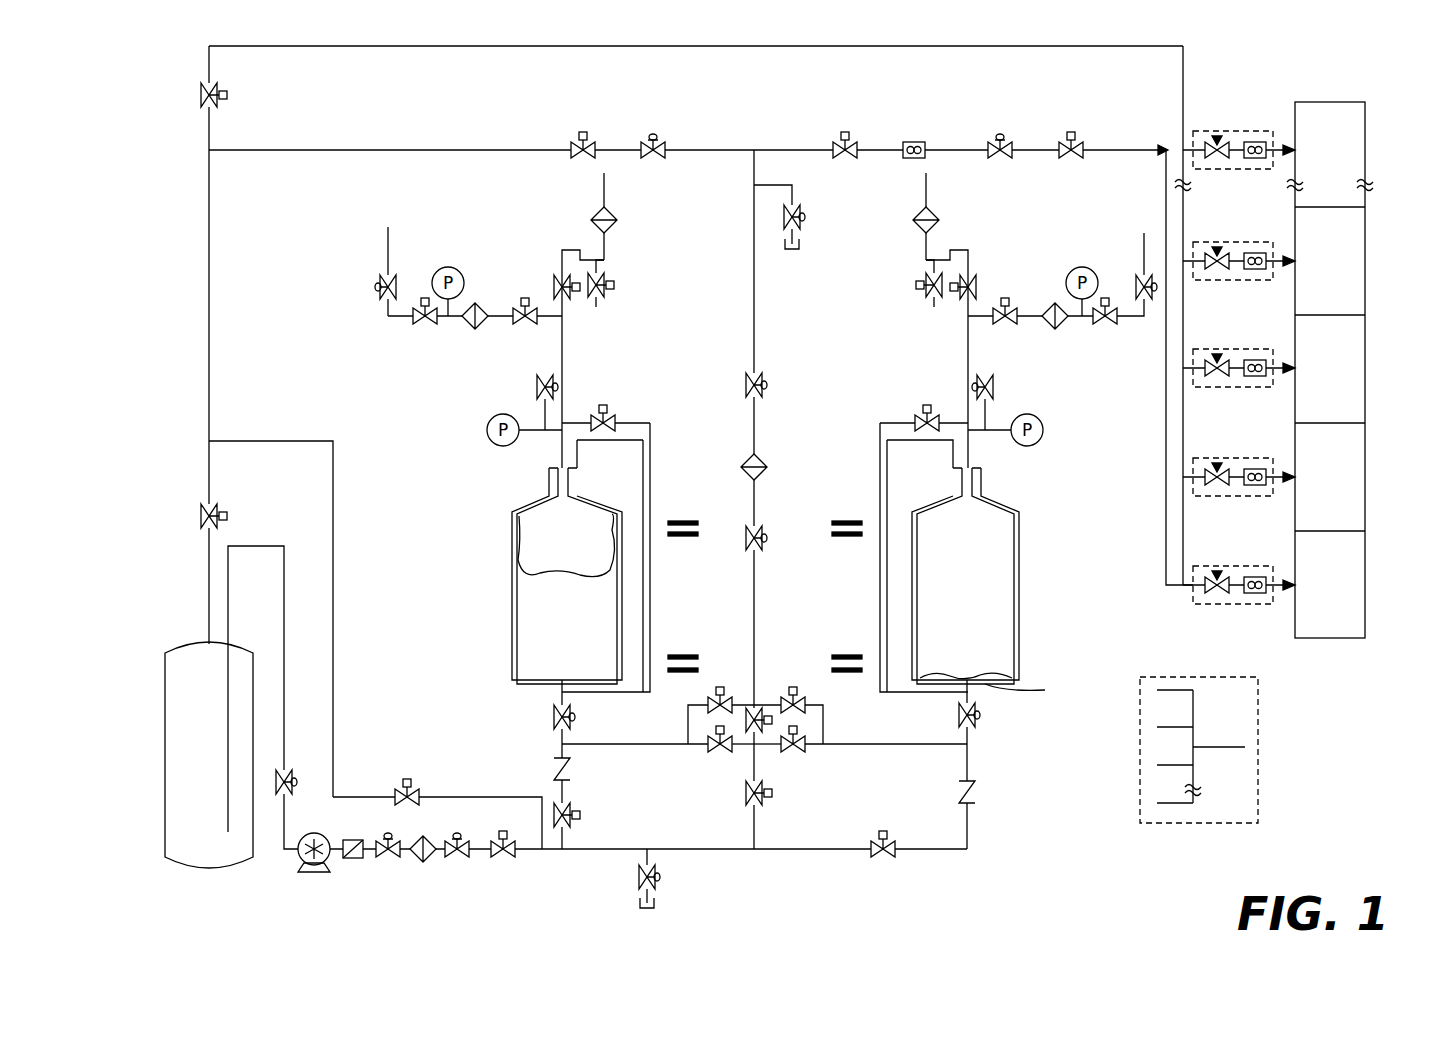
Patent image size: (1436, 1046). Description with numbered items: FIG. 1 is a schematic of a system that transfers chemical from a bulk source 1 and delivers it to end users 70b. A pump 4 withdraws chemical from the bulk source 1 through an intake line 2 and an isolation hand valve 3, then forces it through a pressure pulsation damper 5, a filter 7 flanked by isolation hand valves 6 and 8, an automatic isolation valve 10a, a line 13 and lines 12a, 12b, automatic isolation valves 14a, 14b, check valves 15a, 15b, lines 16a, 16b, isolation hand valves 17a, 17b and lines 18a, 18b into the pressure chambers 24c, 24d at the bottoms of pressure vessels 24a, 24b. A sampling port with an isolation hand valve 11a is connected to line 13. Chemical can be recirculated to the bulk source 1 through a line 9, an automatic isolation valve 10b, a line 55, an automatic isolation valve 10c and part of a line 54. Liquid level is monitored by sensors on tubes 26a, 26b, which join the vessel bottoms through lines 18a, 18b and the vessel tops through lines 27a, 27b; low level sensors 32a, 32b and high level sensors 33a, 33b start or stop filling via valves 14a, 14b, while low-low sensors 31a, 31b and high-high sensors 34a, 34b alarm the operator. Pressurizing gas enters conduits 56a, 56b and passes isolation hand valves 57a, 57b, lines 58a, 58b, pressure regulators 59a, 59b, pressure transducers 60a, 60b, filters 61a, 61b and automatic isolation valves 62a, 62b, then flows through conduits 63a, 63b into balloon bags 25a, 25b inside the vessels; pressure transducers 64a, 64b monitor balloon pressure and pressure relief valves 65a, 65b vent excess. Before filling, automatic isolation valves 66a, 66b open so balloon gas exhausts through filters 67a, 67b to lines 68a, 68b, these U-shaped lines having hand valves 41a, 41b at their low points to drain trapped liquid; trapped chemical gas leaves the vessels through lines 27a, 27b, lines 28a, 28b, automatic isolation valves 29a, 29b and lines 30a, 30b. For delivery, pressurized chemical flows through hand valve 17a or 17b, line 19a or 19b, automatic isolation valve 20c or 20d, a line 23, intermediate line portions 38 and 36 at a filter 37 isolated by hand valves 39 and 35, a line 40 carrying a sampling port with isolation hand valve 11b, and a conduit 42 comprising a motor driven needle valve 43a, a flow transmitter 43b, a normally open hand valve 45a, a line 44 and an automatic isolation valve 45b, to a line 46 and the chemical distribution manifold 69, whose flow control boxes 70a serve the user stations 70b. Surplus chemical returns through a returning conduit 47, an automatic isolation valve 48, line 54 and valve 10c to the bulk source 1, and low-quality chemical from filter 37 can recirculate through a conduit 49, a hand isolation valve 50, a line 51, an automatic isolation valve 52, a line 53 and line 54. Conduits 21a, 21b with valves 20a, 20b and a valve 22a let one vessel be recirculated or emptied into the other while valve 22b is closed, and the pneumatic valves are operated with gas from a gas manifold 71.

The bulk source 1 is at (164, 772).
The intake line 2 is at (287, 668).
The isolation hand valve 3 is at (300, 770).
The pump 4 is at (299, 866).
The pressure pulsation damper 5 is at (352, 858).
The isolation hand valve 6 is at (386, 861).
The filter 7 is at (428, 863).
The isolation hand valve 8 is at (459, 860).
The line 9 is at (484, 796).
The automatic isolation valve 10a is at (505, 860).
The automatic isolation valve 10b is at (418, 790).
The automatic isolation valve 10c is at (222, 514).
The isolation hand valve 11a is at (638, 879).
The isolation hand valve 11b is at (801, 208).
The line 12a is at (576, 846).
The line 12b is at (843, 853).
The line 13 is at (736, 853).
The automatic isolation valve 14a is at (576, 814).
The automatic isolation valve 14b is at (890, 859).
The check valve 15a is at (574, 770).
The check valve 15b is at (978, 793).
The line 16a is at (560, 746).
The line 16b is at (972, 752).
The isolation hand valve 17a is at (580, 716).
The isolation hand valve 17b is at (957, 717).
The line 18a is at (560, 691).
The line 18b is at (976, 695).
The line 19a is at (622, 744).
The line 19b is at (913, 753).
The valve 20a is at (713, 755).
The valve 20b is at (802, 754).
The automatic isolation valve 20c is at (719, 691).
The automatic isolation valve 20d is at (791, 691).
The conduit 21a is at (747, 753).
The conduit 21b is at (762, 753).
The valve 22a is at (763, 803).
The valve 22b is at (772, 721).
The line 23 is at (758, 603).
The pressure vessel 24a is at (510, 645).
The pressure vessel 24b is at (1022, 620).
The pressure chamber 24c is at (530, 608).
The pressure chamber 24d is at (1036, 688).
The balloon bag 25a is at (535, 537).
The balloon bag 25b is at (1000, 553).
The tube 26a is at (652, 455).
The tube 26b is at (876, 462).
The line 27a is at (613, 445).
The line 27b is at (911, 445).
The line 28a is at (642, 420).
The line 28b is at (884, 422).
The automatic isolation valve 29a is at (620, 420).
The automatic isolation valve 29b is at (932, 415).
The line 30a is at (576, 420).
The line 30b is at (950, 420).
The low-low level sensor 31a is at (683, 673).
The low-low level sensor 31b is at (847, 673).
The low level sensor 32a is at (683, 655).
The low level sensor 32b is at (847, 655).
The high level sensor 33a is at (683, 538).
The high level sensor 33b is at (846, 540).
The high-high level sensor 34a is at (684, 520).
The high-high level sensor 34b is at (847, 520).
The hand valve 35 is at (762, 546).
The pipe 36 is at (758, 497).
The filter 37 is at (761, 459).
The pipe 38 is at (752, 432).
The hand valve 39 is at (767, 385).
The line 40 is at (758, 293).
The hand valve 41a is at (606, 278).
The hand valve 41b is at (924, 282).
The conduit 42 is at (779, 145).
The motor driven needle valve 43a is at (849, 140).
The flow transmitter 43b is at (915, 140).
The line 44 is at (1033, 145).
The normally open hand valve 45a is at (994, 140).
The automatic isolation valve 45b is at (1074, 140).
The line 46 is at (1133, 145).
The returning conduit 47 is at (766, 50).
The automatic isolation valve 48 is at (229, 96).
The conduit 49 is at (708, 145).
The hand isolation valve 50 is at (663, 140).
The line 51 is at (625, 140).
The automatic isolation valve 52 is at (586, 140).
The line 53 is at (446, 149).
The line 54 is at (212, 270).
The line 55 is at (335, 490).
The conduit 56a is at (387, 235).
The conduit 56b is at (1144, 237).
The isolation hand valve 57a is at (382, 282).
The isolation hand valve 57b is at (1138, 282).
The line 58a is at (396, 320).
The line 58b is at (1143, 320).
The pressure regulator 59a is at (414, 305).
The pressure regulator 59b is at (1103, 328).
The pressure transducer 60a is at (455, 267).
The pressure transducer 60b is at (1070, 269).
The filter 61a is at (486, 303).
The filter 61b is at (1047, 308).
The automatic isolation valve 62a is at (535, 305).
The automatic isolation valve 62b is at (1006, 330).
The conduit 63a is at (560, 344).
The conduit 63b is at (965, 335).
The pressure transducer 64a is at (486, 430).
The pressure transducer 64b is at (1044, 432).
The pressure relief valve 65a is at (536, 384).
The pressure relief valve 65b is at (995, 388).
The automatic isolation valve 66a is at (576, 294).
The automatic isolation valve 66b is at (975, 282).
The filter 67a is at (618, 221).
The filter 67b is at (912, 220).
The line 68a is at (605, 188).
The line 68b is at (928, 190).
The chemical distribution manifold 69 is at (1184, 513).
The flow control box 70a is at (1210, 134).
The end users 70b is at (1366, 487).
The gas manifold 71 is at (1259, 745).